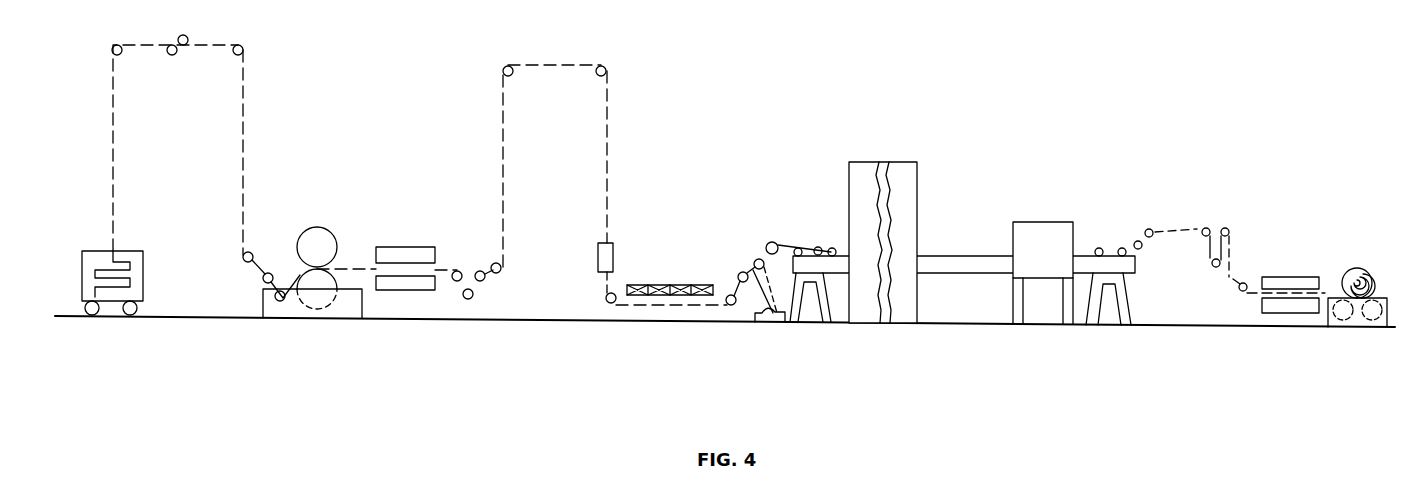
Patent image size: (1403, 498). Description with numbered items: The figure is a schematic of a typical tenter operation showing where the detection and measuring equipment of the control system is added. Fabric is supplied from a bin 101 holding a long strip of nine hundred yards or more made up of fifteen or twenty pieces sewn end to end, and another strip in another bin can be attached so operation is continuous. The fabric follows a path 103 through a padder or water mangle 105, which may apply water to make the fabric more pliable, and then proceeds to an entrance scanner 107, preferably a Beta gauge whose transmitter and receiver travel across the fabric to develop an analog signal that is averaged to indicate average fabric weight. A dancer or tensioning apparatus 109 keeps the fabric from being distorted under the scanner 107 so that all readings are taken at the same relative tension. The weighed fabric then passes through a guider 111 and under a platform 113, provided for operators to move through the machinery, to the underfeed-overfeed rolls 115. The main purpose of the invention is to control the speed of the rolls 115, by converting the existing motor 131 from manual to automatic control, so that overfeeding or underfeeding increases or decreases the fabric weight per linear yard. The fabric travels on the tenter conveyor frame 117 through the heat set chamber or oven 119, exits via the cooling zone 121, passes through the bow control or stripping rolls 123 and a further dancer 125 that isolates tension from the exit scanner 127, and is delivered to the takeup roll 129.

The bin 101 is at (138, 272).
The path 103 is at (113, 141).
The padder 105 is at (288, 294).
The entrance scanner 107 is at (423, 255).
The dancer 109 is at (469, 287).
The guider 111 is at (605, 262).
The platform 113 is at (707, 285).
The underfeed - overfeed rolls 115 is at (752, 265).
The tenter conveyor frame 117 is at (980, 266).
The tenter heat set chamber 119 is at (860, 182).
The cooling zone 121 is at (1043, 273).
The bow control or stripping rolls 123 is at (1152, 228).
The dancer 125 is at (1204, 250).
The exit scanner 127 is at (1312, 283).
The takeup roll 129 is at (1374, 282).
The motor 131 is at (783, 313).